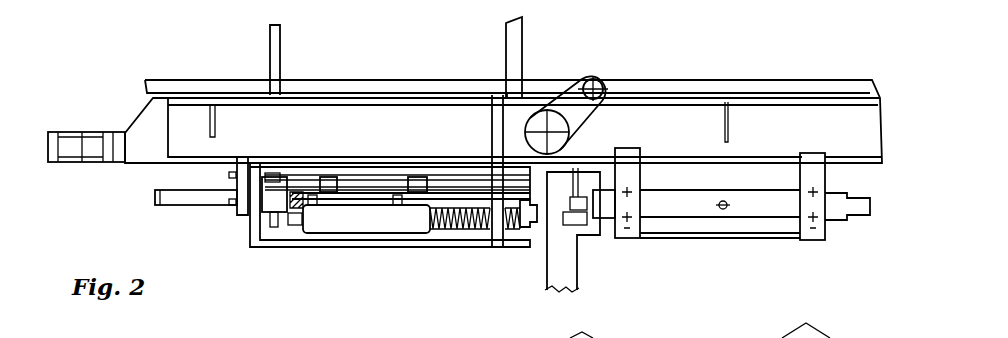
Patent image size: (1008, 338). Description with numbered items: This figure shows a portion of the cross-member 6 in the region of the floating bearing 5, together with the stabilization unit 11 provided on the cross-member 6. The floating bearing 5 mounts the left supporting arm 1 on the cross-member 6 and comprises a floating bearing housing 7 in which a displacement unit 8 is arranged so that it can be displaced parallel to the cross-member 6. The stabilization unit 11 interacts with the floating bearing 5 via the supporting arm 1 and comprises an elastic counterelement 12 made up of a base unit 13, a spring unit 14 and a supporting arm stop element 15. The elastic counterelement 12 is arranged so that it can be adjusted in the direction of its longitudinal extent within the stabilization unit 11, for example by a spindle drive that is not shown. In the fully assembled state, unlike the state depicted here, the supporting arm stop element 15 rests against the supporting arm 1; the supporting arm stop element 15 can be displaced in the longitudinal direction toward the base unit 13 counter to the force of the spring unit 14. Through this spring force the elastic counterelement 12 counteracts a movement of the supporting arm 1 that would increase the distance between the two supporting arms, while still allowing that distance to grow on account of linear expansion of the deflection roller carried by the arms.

The supporting arm 1 is at (563, 278).
The floating bearing 5 is at (742, 224).
The cross-member 6 is at (780, 118).
The floating bearing housing 7 is at (755, 228).
The displacement unit 8 is at (603, 218).
The stabilization unit 11 is at (346, 245).
The elastic counterelement 12 is at (405, 240).
The base unit 13 is at (337, 225).
The spring unit 14 is at (457, 232).
The supporting arm stop element 15 is at (537, 230).